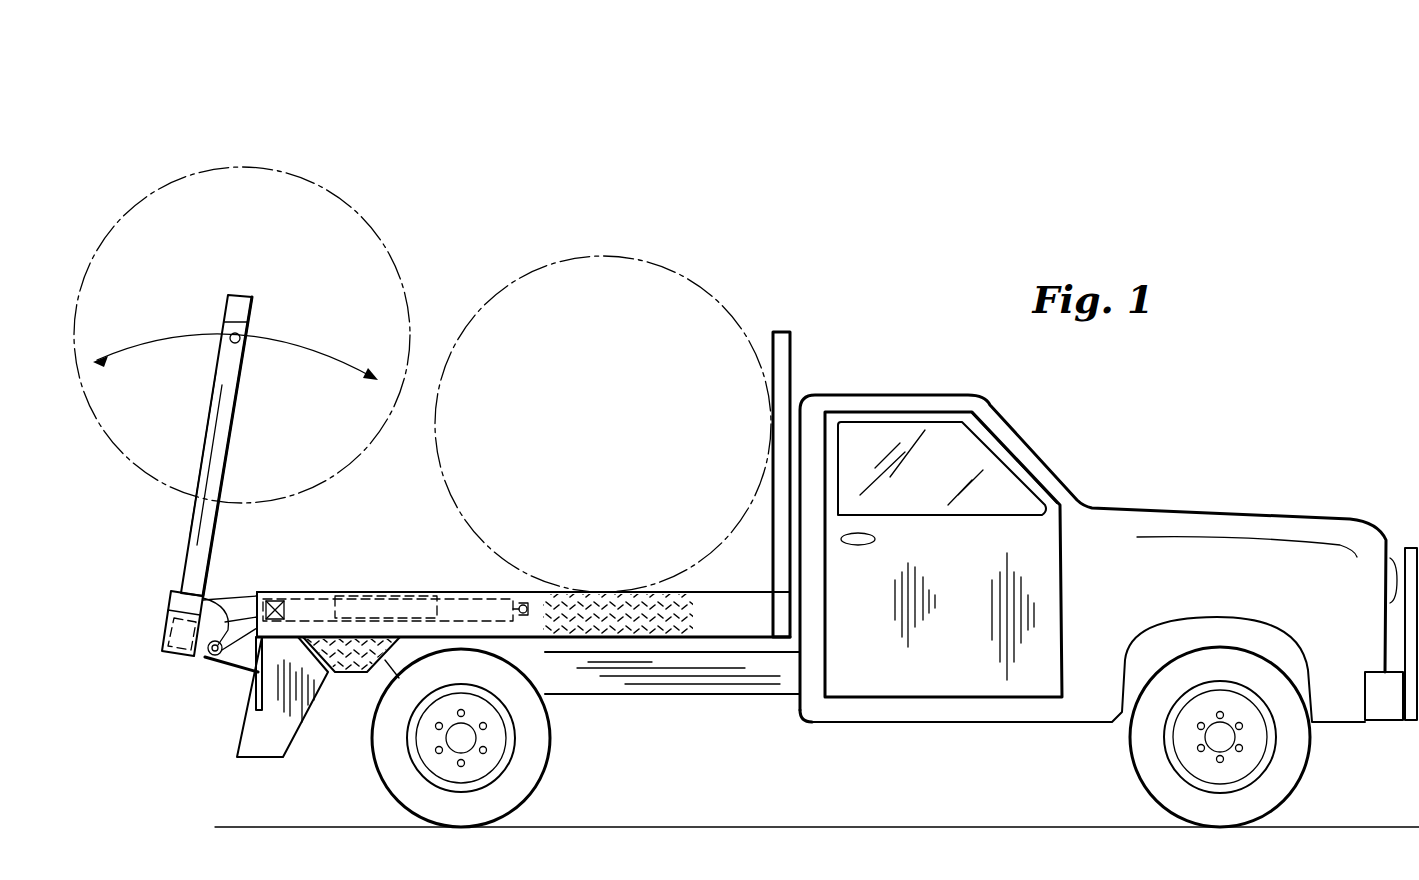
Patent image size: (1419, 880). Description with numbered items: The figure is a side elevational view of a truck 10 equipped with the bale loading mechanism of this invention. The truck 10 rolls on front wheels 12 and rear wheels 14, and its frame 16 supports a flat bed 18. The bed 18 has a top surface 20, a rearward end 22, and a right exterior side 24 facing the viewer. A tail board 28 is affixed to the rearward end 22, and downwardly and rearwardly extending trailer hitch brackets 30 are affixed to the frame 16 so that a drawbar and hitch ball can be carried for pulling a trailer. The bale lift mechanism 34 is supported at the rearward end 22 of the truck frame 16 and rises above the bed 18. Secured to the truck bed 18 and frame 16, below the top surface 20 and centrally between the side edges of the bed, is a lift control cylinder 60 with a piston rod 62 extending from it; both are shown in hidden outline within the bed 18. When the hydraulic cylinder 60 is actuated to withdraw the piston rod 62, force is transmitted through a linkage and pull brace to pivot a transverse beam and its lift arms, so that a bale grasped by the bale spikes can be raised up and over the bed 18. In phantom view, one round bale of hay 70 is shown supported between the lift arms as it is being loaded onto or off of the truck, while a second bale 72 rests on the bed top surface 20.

The truck 10 is at (1100, 441).
The front wheels 12 is at (1280, 778).
The rear wheels 14 is at (532, 766).
The frame 16 is at (705, 682).
The bed 18 is at (610, 562).
The top surface 20 is at (427, 592).
The rearward end 22 is at (255, 592).
The right exterior side 24 is at (723, 610).
The tail board 28 is at (258, 688).
The trailer hitch brackets 30 is at (278, 728).
The bale lift mechanism 34 is at (146, 566).
The lift control cylinder 60 is at (383, 600).
The piston rod 62 is at (315, 598).
The round bale of hay 70 is at (360, 210).
The bale 72 is at (697, 280).